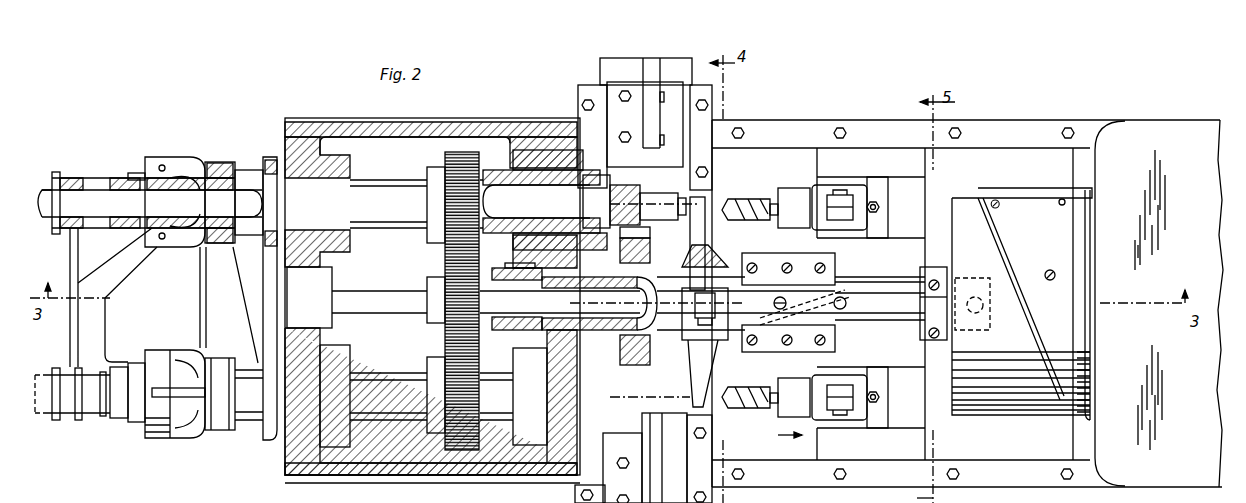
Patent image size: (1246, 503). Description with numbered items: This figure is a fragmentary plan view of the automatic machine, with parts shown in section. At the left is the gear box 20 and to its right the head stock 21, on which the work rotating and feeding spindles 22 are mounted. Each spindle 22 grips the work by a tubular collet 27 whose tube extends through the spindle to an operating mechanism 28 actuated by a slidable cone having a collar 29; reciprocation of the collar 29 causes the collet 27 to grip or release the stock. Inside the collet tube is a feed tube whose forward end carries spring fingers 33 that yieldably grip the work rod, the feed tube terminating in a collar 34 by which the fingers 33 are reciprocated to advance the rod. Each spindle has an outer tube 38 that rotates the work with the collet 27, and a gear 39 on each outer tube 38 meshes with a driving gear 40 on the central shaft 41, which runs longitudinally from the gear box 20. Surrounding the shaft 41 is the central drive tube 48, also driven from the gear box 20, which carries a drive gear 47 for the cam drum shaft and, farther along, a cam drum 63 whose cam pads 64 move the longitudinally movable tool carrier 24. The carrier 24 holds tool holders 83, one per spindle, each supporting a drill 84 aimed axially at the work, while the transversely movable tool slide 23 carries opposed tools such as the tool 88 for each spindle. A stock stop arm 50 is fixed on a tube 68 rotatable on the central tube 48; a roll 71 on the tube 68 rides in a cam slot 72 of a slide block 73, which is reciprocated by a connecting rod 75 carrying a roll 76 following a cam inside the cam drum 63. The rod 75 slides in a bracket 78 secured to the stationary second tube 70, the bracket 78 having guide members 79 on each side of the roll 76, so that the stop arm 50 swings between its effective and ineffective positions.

The gear box 20 is at (1156, 117).
The head stock 21 is at (454, 114).
The work rotating and feeding spindle 22 is at (390, 238).
The transversely movable tool slide 23 is at (646, 57).
The longitudinally movable tool carrier 24 is at (777, 436).
The tubular collet 27 is at (616, 193).
The operating mechanism 28 is at (185, 156).
The cone collar 29 is at (222, 165).
The spring fingers 33 is at (578, 195).
The collar 34 is at (67, 178).
The outer tube 38 is at (386, 180).
The gear 39 is at (445, 252).
The driving gear 40 is at (443, 321).
The central shaft 41 is at (376, 309).
The drive gear 47 is at (510, 265).
The central drive tube 48 is at (591, 291).
The stock stop arm 50 is at (782, 290).
The cam drum 63 is at (1012, 412).
The cam pads 64 is at (1027, 190).
The tube 68 is at (676, 276).
The second tube 70 is at (858, 278).
The roll 71 is at (792, 323).
The cam slot 72 is at (838, 330).
The slide block 73 is at (862, 322).
The connecting rod 75 is at (885, 292).
The roll 76 is at (990, 311).
The bracket 78 is at (931, 270).
The guide members 79 is at (966, 280).
The tool holder 83 is at (850, 416).
The drill 84 is at (760, 191).
The tool 88 is at (648, 232).